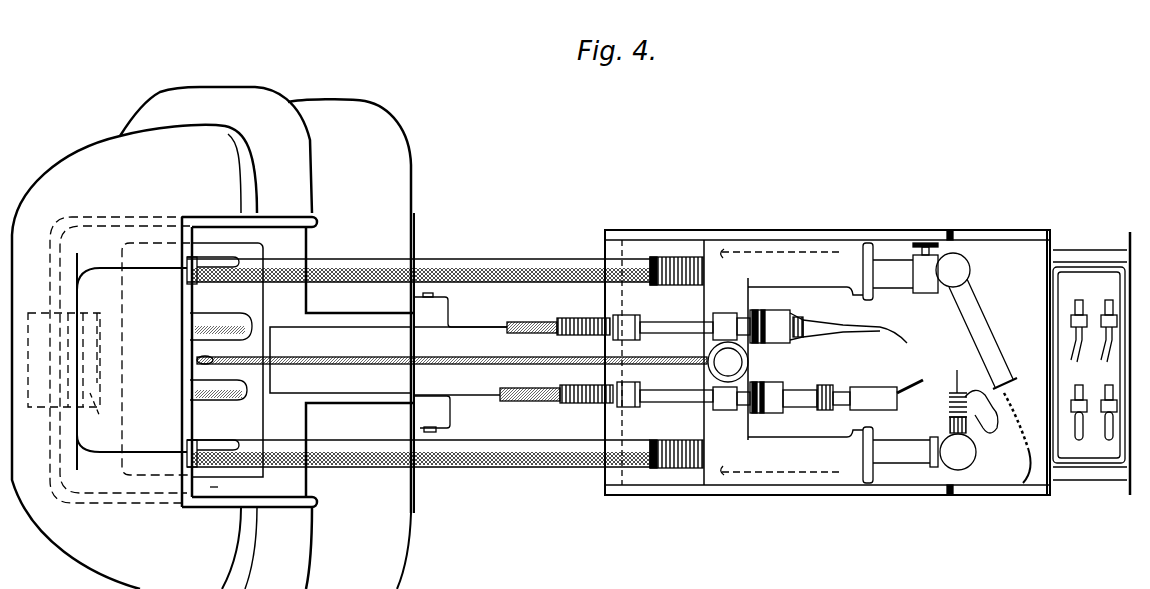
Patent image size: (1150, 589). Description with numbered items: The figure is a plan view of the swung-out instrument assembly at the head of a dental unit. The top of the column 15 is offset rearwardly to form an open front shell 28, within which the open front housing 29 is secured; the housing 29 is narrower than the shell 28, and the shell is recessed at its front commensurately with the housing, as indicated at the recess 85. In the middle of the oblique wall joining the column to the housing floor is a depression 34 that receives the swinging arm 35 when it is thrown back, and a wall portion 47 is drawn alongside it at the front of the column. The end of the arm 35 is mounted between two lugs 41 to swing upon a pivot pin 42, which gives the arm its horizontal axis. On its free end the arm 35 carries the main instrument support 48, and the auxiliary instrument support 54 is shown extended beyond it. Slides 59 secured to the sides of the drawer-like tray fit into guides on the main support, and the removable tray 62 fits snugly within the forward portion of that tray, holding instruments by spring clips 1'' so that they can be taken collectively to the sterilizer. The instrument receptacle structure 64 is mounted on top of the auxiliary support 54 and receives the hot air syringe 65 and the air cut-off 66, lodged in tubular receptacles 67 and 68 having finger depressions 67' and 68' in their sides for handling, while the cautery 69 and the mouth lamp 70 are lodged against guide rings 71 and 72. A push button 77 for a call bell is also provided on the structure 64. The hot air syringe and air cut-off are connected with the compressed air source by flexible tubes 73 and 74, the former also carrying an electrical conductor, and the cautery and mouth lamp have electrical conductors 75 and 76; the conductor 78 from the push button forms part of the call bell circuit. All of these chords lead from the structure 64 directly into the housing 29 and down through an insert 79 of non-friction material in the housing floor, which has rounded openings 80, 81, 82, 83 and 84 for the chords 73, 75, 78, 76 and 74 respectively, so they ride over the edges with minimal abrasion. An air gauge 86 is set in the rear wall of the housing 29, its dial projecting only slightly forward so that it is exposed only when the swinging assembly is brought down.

The column 15 is at (412, 533).
The shell 28 is at (73, 160).
The open front housing 29 is at (100, 217).
The depression 34 is at (350, 322).
The swinging arm 35 is at (478, 333).
The lugs 41 is at (445, 303).
The pivot pin 42 is at (438, 431).
The partition wall 47 is at (415, 243).
The instrument support 48 is at (667, 483).
The auxiliary instrument support 54 is at (934, 343).
The slides 59 is at (1097, 255).
The removable tray 62 is at (1089, 389).
The instrument receptacle structure 64 is at (736, 427).
The hot air syringe 65 is at (887, 263).
The air cut-off 66 is at (903, 460).
The tubular receptacle 67 is at (827, 348).
The finger depression 67' is at (782, 228).
The tubular receptacle 68 is at (804, 503).
The finger depression 68' is at (782, 498).
The cautery 69 is at (787, 322).
The mouth lamp 70 is at (815, 388).
The guide ring 71 is at (713, 318).
The guide ring 72 is at (716, 407).
The flexible tube 73 is at (507, 270).
The flexible tube 74 is at (480, 462).
The electrical conductor 75 is at (247, 337).
The electrical conductor 76 is at (257, 383).
The push button 77 is at (740, 362).
The electrical conductor 78 is at (500, 393).
The insert 79 is at (255, 419).
The opening 80 is at (190, 257).
The opening 81 is at (200, 313).
The opening 82 is at (180, 357).
The opening 83 is at (210, 400).
The opening 84 is at (183, 437).
The recess 85 is at (210, 487).
The air gauge 86 is at (92, 400).
The spring clips 1'' is at (1095, 370).